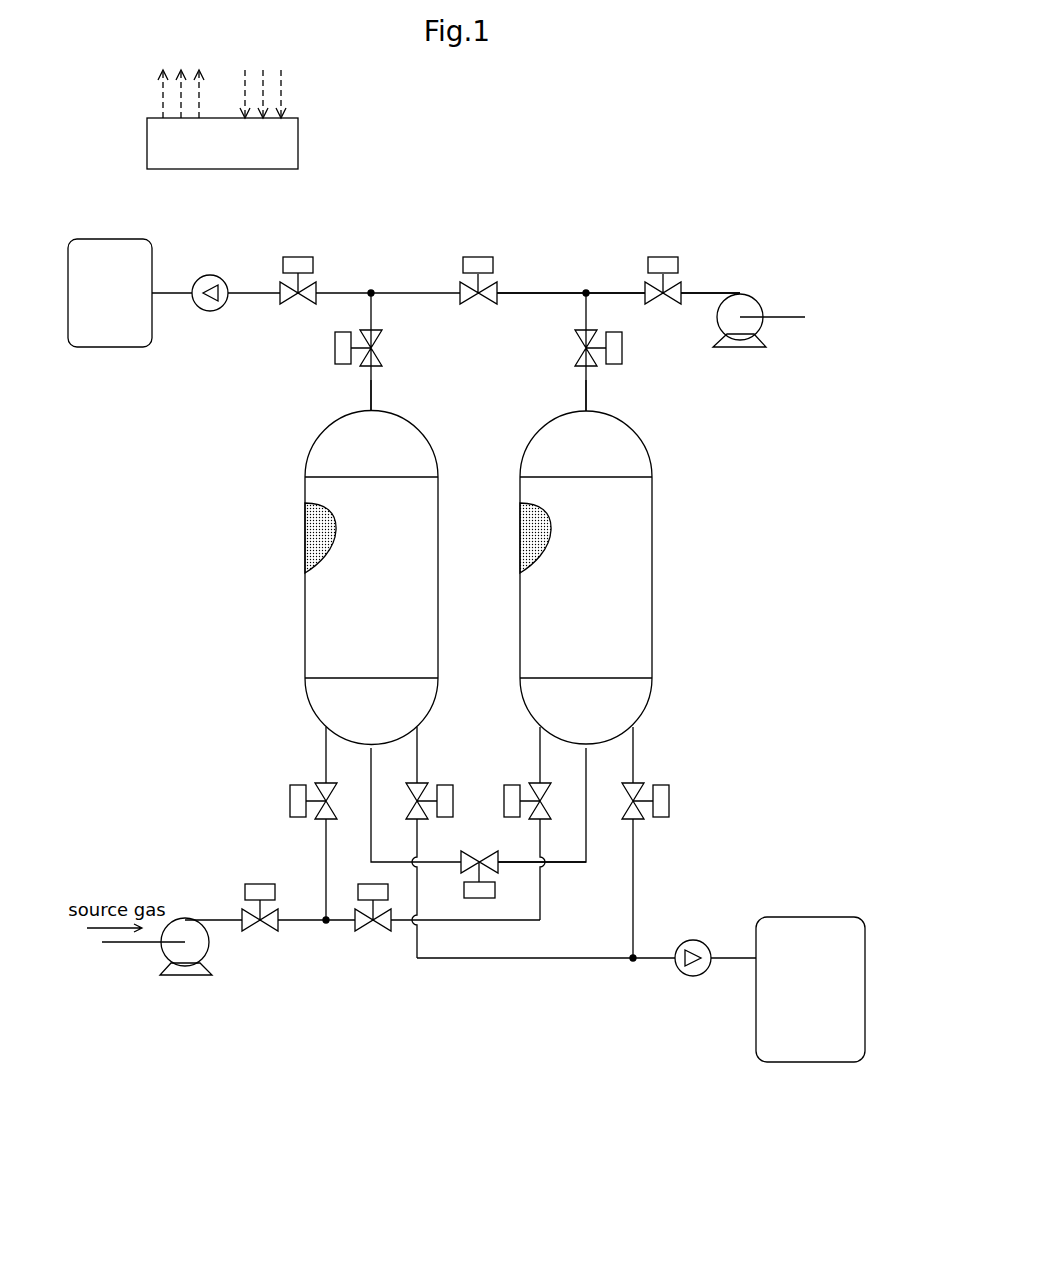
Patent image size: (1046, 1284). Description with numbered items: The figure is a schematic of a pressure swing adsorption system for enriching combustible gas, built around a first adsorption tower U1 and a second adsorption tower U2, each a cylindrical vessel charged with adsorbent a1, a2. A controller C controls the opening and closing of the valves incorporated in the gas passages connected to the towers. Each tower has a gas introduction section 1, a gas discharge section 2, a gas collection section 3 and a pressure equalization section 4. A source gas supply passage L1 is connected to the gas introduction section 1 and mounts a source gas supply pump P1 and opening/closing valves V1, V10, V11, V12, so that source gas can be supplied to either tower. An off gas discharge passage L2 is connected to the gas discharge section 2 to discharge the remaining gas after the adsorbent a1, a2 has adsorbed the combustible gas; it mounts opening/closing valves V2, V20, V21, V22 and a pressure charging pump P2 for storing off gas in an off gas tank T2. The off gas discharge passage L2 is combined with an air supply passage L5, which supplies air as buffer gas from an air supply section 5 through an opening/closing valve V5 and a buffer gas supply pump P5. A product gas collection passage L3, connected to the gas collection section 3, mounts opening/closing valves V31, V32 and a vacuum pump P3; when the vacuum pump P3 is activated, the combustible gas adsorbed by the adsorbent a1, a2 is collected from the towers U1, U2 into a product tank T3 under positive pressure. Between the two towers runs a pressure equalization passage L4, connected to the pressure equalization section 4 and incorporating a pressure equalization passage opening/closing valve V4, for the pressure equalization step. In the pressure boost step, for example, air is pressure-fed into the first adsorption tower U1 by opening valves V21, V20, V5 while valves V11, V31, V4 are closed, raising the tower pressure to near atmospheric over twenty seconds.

The controller C is at (147, 143).
The off gas tank T2 is at (108, 347).
The pressure charging pump P2 is at (212, 275).
The off gas discharge passage L2 is at (255, 293).
The opening/closing valve V2 is at (313, 264).
The opening/closing valve V20 is at (478, 257).
The opening/closing valve V21 is at (382, 340).
The opening/closing valve V22 is at (578, 340).
The air supply passage L5 is at (617, 293).
The opening/closing valve V5 is at (663, 257).
The air supply section 5 is at (726, 273).
The buffer gas supply pump P5 is at (740, 347).
The gas discharge section 2 is at (351, 401).
The first adsorption tower U1 is at (305, 626).
The second adsorption tower U2 is at (652, 590).
The adsorbent a1 is at (312, 533).
The adsorbent a2 is at (528, 533).
The gas introduction section 1 is at (313, 735).
The gas collection section 3 is at (434, 744).
The pressure equalization section 4 is at (357, 755).
The opening/closing valve V11 is at (290, 800).
The opening/closing valve V12 is at (504, 800).
The opening/closing valve V31 is at (445, 817).
The opening/closing valve V32 is at (668, 801).
The pressure equalization passage opening/closing valve V4 is at (481, 898).
The pressure equalization passage L4 is at (562, 866).
The source gas supply pump P1 is at (185, 975).
The source gas supply passage L1 is at (297, 920).
The opening/closing valve V1 is at (244, 892).
The opening/closing valve V10 is at (377, 931).
The product gas collection passage L3 is at (652, 960).
The vacuum pump P3 is at (695, 940).
The product tank T3 is at (815, 1062).